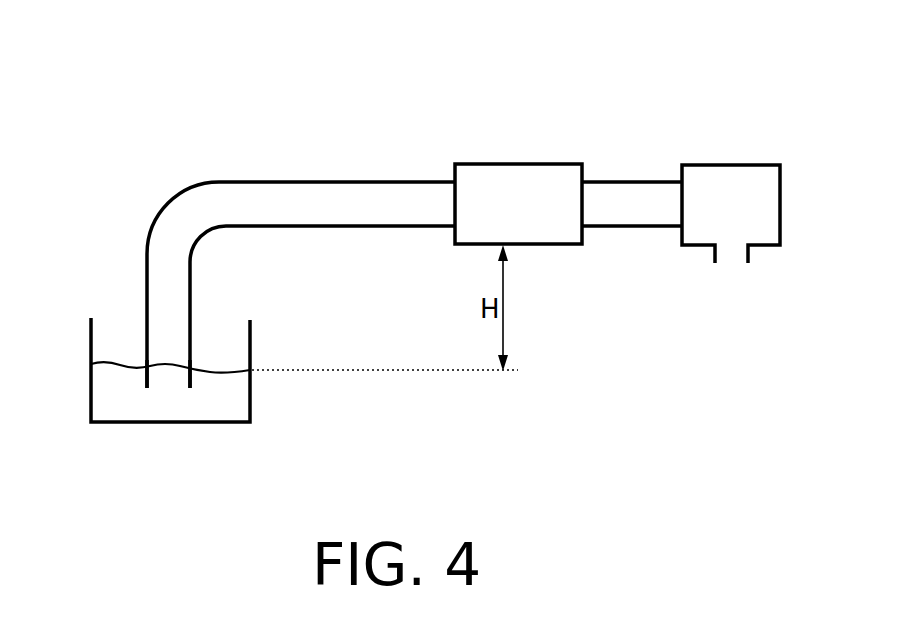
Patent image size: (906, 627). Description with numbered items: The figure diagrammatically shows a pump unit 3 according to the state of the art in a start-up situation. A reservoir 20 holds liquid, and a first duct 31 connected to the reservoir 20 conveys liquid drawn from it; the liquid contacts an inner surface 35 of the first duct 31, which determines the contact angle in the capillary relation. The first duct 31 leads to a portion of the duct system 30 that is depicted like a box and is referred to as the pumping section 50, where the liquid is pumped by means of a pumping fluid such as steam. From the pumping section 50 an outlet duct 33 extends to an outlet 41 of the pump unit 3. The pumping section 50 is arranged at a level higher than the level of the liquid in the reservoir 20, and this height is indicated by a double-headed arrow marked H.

The pump unit 3 is at (169, 114).
The duct system 30 is at (350, 106).
The reservoir 20 is at (102, 343).
The first duct 31 is at (160, 278).
The inner surface 35 is at (190, 381).
The pumping section 50 is at (517, 180).
The outlet duct 33 is at (643, 196).
The outlet 41 is at (730, 252).